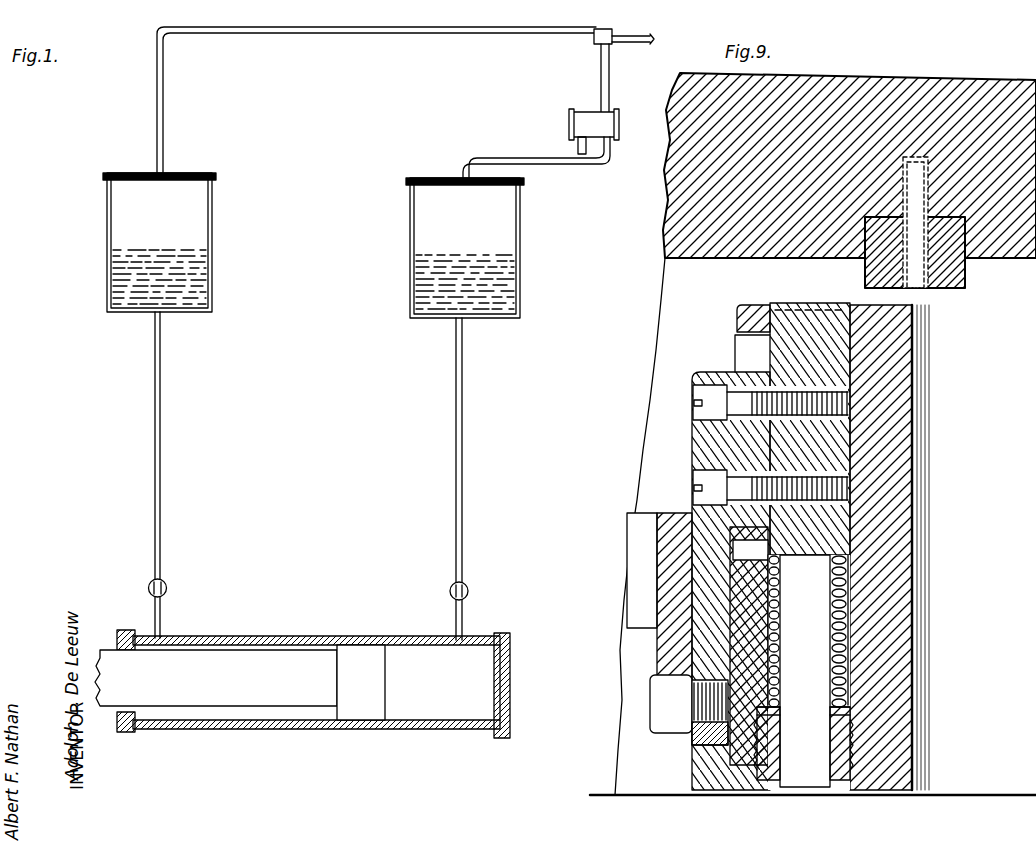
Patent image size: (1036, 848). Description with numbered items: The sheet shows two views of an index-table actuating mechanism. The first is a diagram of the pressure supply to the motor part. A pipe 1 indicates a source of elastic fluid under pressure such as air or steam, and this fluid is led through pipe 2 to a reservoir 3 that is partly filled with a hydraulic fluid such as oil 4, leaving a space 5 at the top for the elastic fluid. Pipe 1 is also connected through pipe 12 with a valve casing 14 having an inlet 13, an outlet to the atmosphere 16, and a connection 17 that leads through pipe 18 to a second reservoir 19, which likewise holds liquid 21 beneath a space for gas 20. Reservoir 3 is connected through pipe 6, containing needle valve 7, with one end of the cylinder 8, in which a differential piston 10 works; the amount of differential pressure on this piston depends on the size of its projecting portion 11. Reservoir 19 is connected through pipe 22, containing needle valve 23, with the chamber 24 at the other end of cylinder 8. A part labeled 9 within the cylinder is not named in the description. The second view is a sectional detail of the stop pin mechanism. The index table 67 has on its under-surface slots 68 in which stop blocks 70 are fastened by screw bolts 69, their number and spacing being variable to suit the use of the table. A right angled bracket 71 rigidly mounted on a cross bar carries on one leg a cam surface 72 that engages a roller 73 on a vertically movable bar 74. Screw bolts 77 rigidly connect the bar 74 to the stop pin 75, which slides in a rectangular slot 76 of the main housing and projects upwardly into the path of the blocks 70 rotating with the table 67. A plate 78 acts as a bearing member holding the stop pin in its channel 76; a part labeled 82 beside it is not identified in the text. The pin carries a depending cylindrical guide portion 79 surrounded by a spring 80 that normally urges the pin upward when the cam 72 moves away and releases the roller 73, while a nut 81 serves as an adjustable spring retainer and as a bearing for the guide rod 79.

In FIG. 1, the pipe 1 is at (640, 30).
In FIG. 1, the pipe 2 is at (358, 33).
In FIG. 1, the reservoir 3 is at (212, 222).
In FIG. 1, the oil 4 is at (212, 270).
In FIG. 1, the space 5 is at (210, 188).
In FIG. 1, the pipe 6 is at (162, 440).
In FIG. 1, the needle valve 7 is at (163, 582).
In FIG. 1, the cylinder 8 is at (266, 628).
In FIG. 1, the piston rod 9 is at (214, 668).
In FIG. 1, the differential piston 10 is at (360, 658).
In FIG. 1, the projecting portion 11 is at (304, 660).
In FIG. 1, the pipe 12 is at (601, 59).
In FIG. 1, the inlet 13 is at (610, 112).
In FIG. 1, the valve casing 14 is at (617, 132).
In FIG. 1, the outlet to the atmosphere 16 is at (578, 145).
In FIG. 1, the connection 17 is at (608, 145).
In FIG. 1, the pipe 18 is at (552, 158).
In FIG. 1, the reservoir 19 is at (410, 238).
In FIG. 1, the space for gas 20 is at (414, 200).
In FIG. 1, the liquid 21 is at (410, 279).
In FIG. 1, the pipe 22 is at (456, 478).
In FIG. 1, the needle valve 23 is at (450, 590).
In FIG. 1, the chamber 24 is at (420, 656).
In FIG. 9, the index table 67 is at (678, 232).
In FIG. 9, the slots 68 is at (965, 248).
In FIG. 9, the screw bolts 69 is at (940, 290).
In FIG. 9, the stop blocks 70 is at (865, 282).
In FIG. 9, the right angled bracket 71 is at (627, 538).
In FIG. 9, the cam surface 72 is at (655, 684).
In FIG. 9, the roller 73 is at (660, 706).
In FIG. 9, the vertically movable bar 74 is at (692, 738).
In FIG. 9, the stop pin 75 is at (772, 303).
In FIG. 9, the rectangular slot 76 is at (850, 345).
In FIG. 9, the screw bolts 77 is at (690, 470).
In FIG. 9, the plate 78 is at (737, 320).
In FIG. 9, the cylindrical guide portion 79 is at (830, 598).
In FIG. 9, the spring 80 is at (845, 640).
In FIG. 9, the nut 81 is at (852, 732).
In FIG. 9, the gap 82 is at (735, 352).